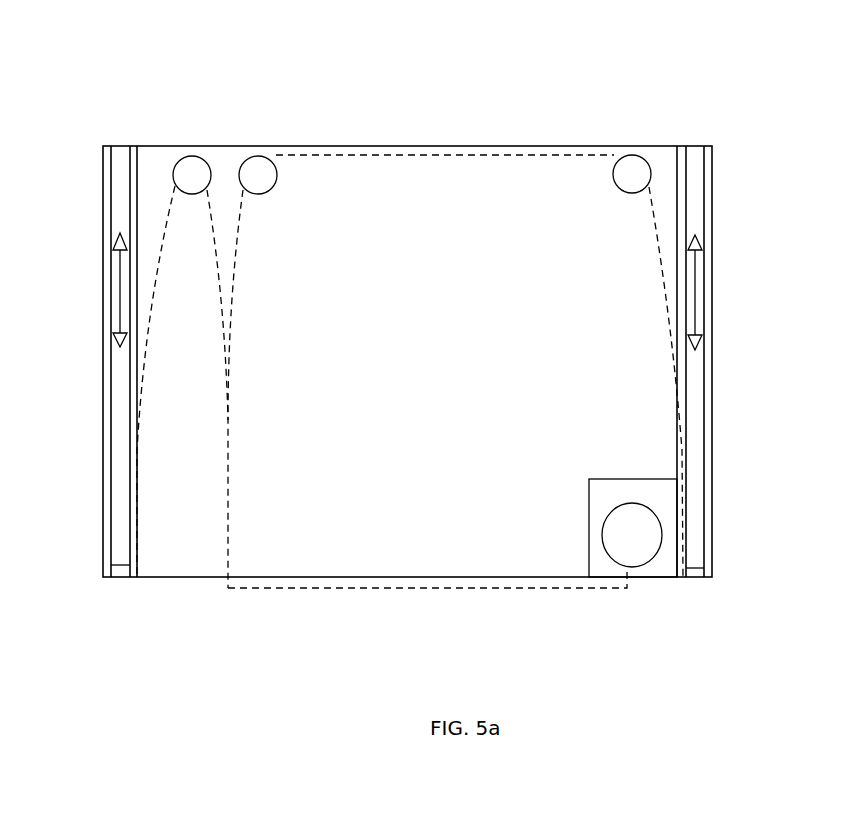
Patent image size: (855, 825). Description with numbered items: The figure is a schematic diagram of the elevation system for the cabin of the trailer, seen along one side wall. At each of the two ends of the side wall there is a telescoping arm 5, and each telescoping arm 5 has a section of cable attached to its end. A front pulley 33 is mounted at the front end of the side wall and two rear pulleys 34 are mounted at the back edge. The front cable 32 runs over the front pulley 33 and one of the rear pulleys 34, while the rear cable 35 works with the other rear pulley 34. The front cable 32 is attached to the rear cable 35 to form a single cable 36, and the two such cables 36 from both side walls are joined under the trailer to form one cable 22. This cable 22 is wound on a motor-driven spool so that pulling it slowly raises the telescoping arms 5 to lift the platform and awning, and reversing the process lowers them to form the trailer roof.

The telescoping arm 5 is at (127, 403).
The cable 22 is at (392, 588).
The front cable 32 is at (662, 232).
The front pulley 33 is at (637, 175).
The rear pulley 34 is at (235, 105).
The rear cable 35 is at (155, 275).
The cable 36 is at (228, 432).